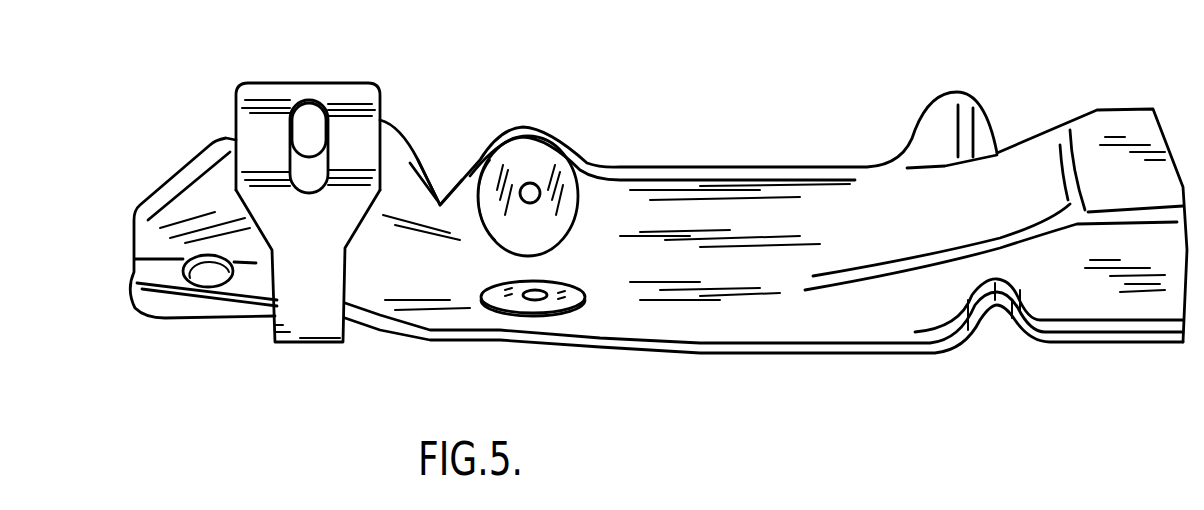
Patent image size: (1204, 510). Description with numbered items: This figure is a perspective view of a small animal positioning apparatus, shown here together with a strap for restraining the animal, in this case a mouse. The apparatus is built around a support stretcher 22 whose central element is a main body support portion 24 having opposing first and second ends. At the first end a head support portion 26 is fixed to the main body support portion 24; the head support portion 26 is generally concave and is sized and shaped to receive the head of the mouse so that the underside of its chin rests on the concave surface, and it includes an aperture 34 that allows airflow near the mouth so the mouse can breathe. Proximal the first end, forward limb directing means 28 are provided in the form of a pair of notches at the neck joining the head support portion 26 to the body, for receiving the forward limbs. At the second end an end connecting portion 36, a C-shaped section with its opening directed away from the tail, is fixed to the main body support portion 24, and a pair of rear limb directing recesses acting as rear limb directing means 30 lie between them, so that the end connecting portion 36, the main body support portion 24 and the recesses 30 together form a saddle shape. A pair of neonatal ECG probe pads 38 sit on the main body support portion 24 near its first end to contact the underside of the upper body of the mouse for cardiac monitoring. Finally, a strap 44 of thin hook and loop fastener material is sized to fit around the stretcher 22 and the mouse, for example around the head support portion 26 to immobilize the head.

The support stretcher 22 is at (690, 350).
The main body support portion 24 is at (730, 215).
The head support portion 26 is at (258, 278).
The forward limb directing means 28 is at (443, 192).
The rear limb directing means 30 is at (1020, 323).
The aperture 34 is at (137, 261).
The end connecting portion 36 is at (1133, 128).
The neonatal electrocardiogram (ECG) probe pads 38 is at (541, 155).
The strap 44 is at (312, 318).